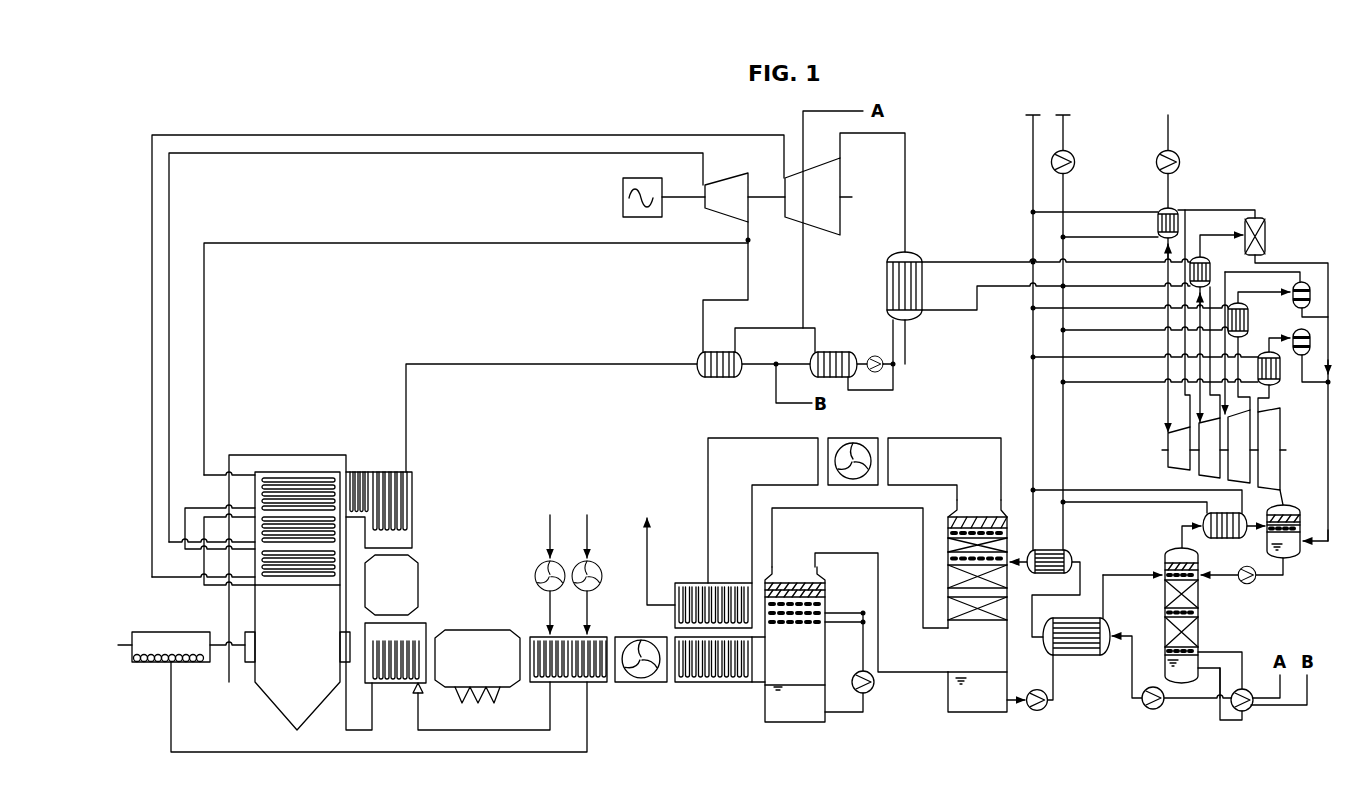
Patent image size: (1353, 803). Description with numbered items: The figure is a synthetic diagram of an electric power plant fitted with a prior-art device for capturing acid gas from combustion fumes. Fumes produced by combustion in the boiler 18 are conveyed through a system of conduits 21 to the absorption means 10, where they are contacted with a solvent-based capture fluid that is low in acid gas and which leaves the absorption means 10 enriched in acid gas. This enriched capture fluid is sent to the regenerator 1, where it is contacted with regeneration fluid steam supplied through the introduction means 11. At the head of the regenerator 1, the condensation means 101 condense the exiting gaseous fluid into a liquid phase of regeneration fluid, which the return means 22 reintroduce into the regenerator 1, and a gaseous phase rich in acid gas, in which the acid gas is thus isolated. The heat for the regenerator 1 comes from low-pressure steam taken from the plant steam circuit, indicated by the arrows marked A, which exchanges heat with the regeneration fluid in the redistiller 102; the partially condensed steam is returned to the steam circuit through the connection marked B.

The regenerator 1 is at (1158, 628).
The absorption means 10 is at (944, 689).
The introduction means 11 is at (1221, 652).
The boiler 18 is at (273, 709).
The system of conduits 21 is at (631, 700).
The return means 22 is at (1270, 578).
The condensation means 101 is at (1199, 514).
The redistiller 102 is at (1252, 686).